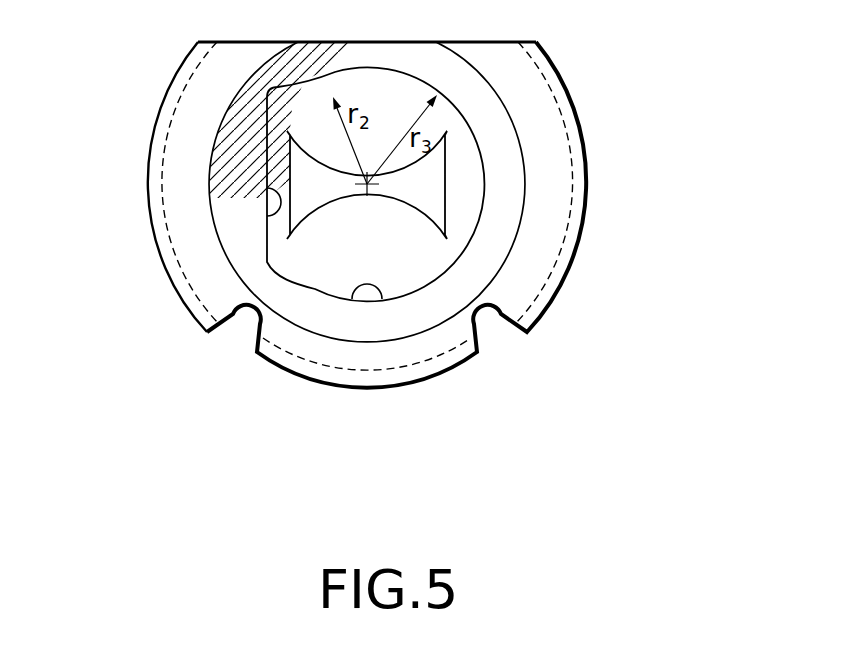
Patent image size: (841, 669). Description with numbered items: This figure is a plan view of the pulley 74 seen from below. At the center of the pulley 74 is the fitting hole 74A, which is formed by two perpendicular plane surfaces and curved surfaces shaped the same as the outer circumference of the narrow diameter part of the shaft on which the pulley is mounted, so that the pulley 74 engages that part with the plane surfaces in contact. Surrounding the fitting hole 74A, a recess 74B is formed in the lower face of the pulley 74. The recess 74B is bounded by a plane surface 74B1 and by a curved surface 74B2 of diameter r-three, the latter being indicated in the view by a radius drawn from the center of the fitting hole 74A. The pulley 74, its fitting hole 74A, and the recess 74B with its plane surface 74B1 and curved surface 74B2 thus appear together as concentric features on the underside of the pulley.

The pulley 74 is at (582, 120).
The fitting hole 74A is at (433, 238).
The recess 74B is at (474, 185).
The plane surface 74B1 is at (282, 200).
The curved surface 74B2 is at (382, 299).